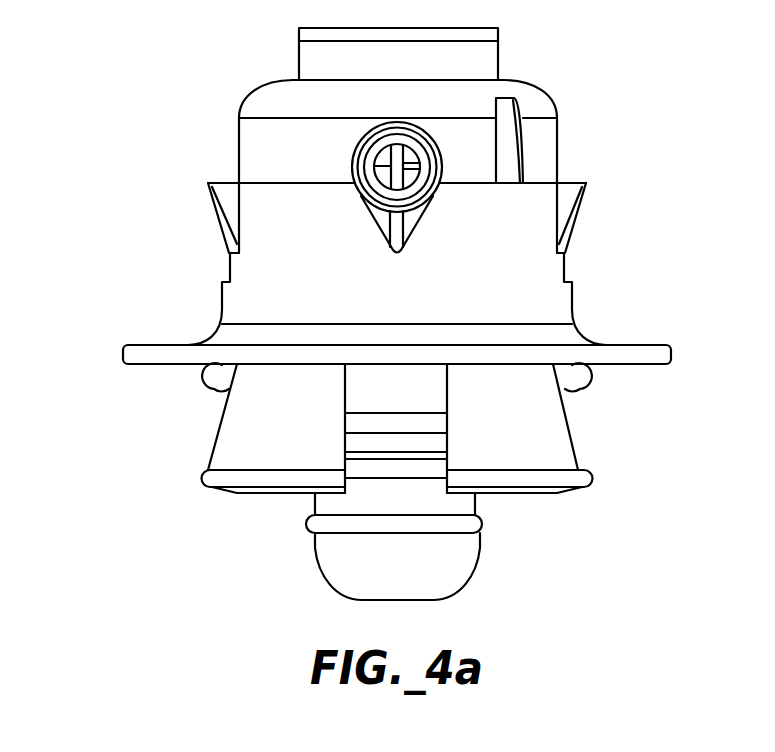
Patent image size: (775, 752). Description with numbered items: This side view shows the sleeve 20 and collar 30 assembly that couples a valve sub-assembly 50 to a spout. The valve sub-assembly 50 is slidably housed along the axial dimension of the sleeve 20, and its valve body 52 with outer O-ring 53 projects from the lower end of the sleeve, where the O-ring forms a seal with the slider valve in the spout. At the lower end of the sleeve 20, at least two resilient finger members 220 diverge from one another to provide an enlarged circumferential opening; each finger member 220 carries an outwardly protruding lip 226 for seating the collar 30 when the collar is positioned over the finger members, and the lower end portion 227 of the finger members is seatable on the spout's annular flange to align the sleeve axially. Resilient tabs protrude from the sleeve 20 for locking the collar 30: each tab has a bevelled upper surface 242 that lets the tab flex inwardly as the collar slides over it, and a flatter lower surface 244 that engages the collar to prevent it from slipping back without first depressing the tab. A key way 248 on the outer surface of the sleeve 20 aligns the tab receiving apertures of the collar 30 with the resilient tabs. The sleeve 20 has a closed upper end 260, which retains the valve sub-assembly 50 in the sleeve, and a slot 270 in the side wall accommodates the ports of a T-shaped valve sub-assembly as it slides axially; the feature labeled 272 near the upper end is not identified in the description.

The sleeve 20 is at (258, 164).
The collar 30 is at (220, 303).
The valve sub-assembly 50 is at (483, 70).
The valve body 52 is at (465, 505).
The outer O-ring 53 is at (308, 521).
The resilient finger members 220 is at (242, 431).
The outwardly protruding lip 226 is at (205, 478).
The lower end portion 227 is at (537, 497).
The bevelled upper surface 242 is at (212, 372).
The flatter lower surface 244 is at (218, 397).
The key ways 248 is at (507, 163).
The closed upper end 260 is at (315, 92).
The slots 270 is at (430, 383).
The port 272 is at (397, 122).